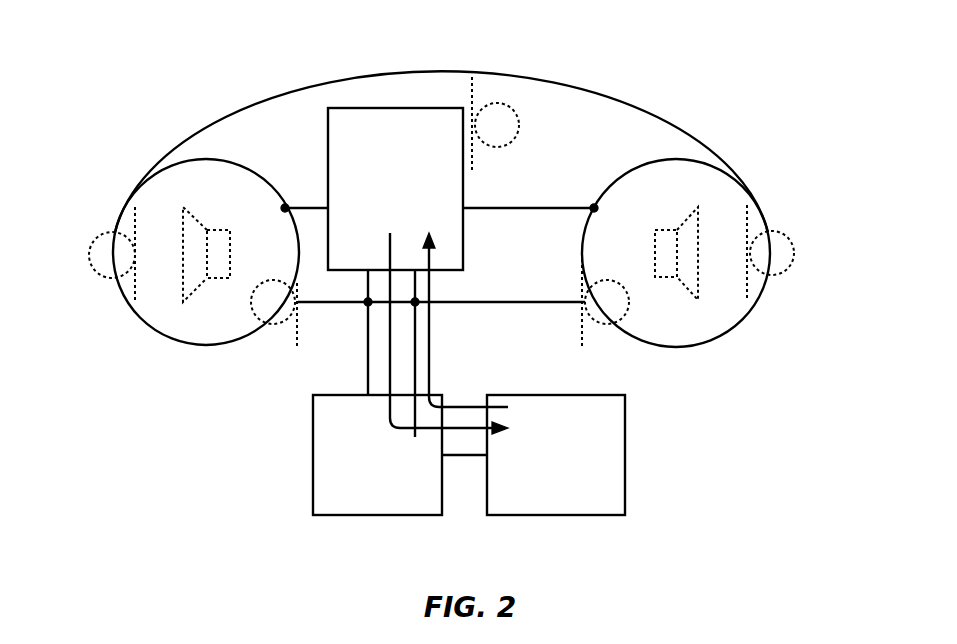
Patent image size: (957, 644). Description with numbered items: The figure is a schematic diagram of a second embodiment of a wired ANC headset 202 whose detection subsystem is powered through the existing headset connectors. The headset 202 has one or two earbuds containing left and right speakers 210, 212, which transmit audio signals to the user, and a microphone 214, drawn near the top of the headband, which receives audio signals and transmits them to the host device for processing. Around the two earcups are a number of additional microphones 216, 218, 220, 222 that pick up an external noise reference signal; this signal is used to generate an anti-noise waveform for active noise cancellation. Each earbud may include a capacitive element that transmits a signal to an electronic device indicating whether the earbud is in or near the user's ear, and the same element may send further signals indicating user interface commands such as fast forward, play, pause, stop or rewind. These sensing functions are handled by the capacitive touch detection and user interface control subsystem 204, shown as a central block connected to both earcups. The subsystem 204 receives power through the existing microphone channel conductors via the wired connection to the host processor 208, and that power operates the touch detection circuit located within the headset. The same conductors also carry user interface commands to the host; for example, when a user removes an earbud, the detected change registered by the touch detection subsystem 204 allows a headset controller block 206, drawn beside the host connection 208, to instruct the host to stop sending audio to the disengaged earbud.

The wired ANC headset 202 is at (440, 70).
The capacitive touch detection and user interface control subsystem 204 is at (328, 132).
The HID and HPH controller 206 is at (313, 418).
The wired connection to the host processor 208 is at (625, 418).
The left speaker 210 is at (213, 230).
The right speaker 212 is at (668, 230).
The microphone 214 is at (516, 118).
The additional microphone 216 is at (780, 232).
The additional microphone 218 is at (608, 324).
The additional microphone 220 is at (274, 324).
The additional microphone 222 is at (105, 233).